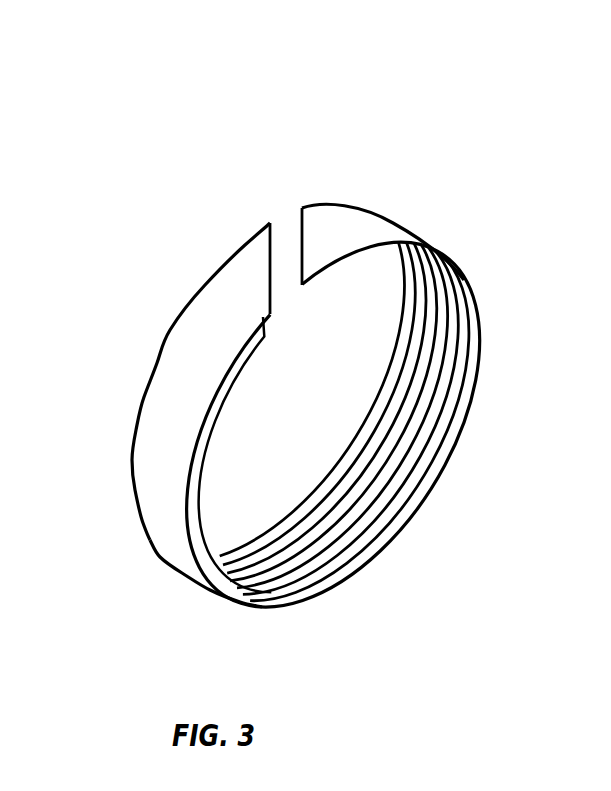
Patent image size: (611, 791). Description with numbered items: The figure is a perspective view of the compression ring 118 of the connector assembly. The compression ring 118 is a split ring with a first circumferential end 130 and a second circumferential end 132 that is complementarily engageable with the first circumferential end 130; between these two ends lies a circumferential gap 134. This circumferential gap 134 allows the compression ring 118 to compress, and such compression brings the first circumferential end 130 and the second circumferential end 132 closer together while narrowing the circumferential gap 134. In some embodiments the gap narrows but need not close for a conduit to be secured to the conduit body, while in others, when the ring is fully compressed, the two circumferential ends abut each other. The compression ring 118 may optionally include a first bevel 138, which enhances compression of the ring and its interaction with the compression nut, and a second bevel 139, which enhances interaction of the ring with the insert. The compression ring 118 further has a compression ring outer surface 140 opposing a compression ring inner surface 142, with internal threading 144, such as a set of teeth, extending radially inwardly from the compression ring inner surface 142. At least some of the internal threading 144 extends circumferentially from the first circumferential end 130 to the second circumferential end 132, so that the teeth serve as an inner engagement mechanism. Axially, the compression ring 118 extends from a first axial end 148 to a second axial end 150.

The compression ring 118 is at (172, 98).
The first circumferential end 130 is at (282, 243).
The second circumferential end 132 is at (296, 238).
The circumferential gap 134 is at (285, 262).
The first bevel 138 is at (218, 396).
The second bevel 139 is at (172, 333).
The compression ring outer surface 140 is at (342, 229).
The compression ring inner surface 142 is at (447, 328).
The internal threading 144 is at (410, 467).
The first axial end 148 is at (150, 539).
The second axial end 150 is at (188, 575).